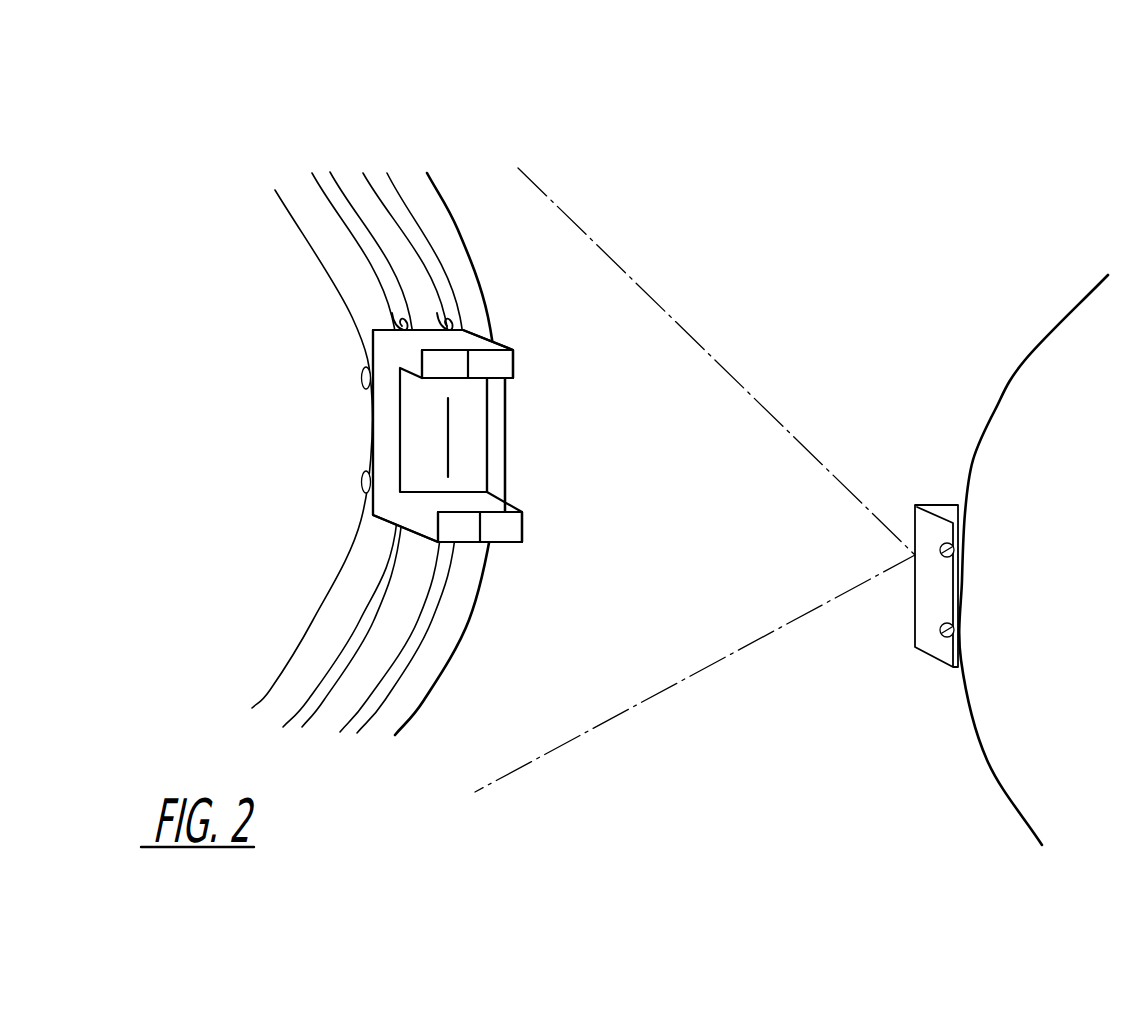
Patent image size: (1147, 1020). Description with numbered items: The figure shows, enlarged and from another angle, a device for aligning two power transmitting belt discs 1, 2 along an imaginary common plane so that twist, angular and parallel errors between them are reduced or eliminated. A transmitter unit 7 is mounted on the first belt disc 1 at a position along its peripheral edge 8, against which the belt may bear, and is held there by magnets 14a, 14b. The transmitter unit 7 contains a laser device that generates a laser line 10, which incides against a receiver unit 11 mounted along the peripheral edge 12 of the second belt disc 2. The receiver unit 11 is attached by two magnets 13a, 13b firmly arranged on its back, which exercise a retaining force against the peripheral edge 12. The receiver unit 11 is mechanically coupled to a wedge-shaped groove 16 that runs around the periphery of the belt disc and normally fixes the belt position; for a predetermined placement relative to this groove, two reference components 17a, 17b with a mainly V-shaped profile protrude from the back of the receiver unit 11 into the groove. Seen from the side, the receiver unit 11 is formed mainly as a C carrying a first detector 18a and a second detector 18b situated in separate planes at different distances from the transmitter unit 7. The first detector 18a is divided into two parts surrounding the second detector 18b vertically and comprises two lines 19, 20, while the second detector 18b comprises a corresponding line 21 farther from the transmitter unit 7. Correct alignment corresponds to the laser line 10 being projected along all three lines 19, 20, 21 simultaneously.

The first belt disc 1 is at (1036, 294).
The second belt disc 2 is at (345, 128).
The transmitter unit 7 is at (920, 613).
The peripheral edge 8 is at (450, 215).
The laser line 10 is at (582, 228).
The receiver unit 11 is at (385, 418).
The peripheral edge 12 is at (323, 638).
The magnet 13a is at (361, 378).
The magnet 13b is at (362, 483).
The magnet 14a is at (953, 548).
The magnet 14b is at (952, 629).
The wedge-shaped groove 16 is at (430, 262).
The reference component 17a is at (400, 322).
The reference component 17b is at (447, 313).
The first detector 18a is at (513, 364).
The second detector 18b is at (473, 447).
The line 19 is at (468, 363).
The line 20 is at (522, 537).
The line 21 is at (450, 440).